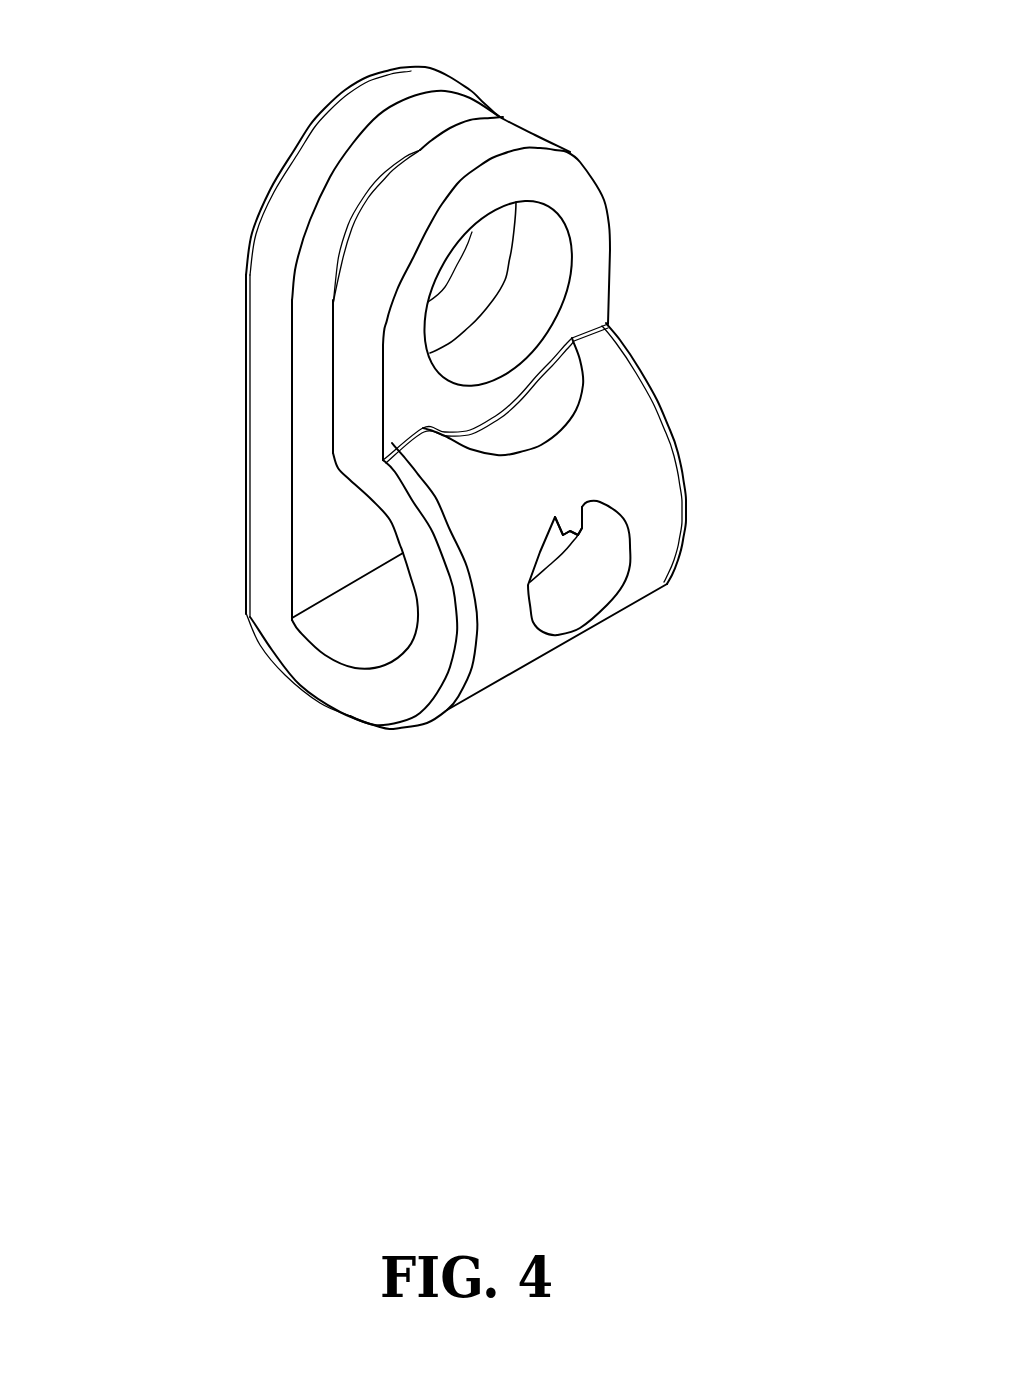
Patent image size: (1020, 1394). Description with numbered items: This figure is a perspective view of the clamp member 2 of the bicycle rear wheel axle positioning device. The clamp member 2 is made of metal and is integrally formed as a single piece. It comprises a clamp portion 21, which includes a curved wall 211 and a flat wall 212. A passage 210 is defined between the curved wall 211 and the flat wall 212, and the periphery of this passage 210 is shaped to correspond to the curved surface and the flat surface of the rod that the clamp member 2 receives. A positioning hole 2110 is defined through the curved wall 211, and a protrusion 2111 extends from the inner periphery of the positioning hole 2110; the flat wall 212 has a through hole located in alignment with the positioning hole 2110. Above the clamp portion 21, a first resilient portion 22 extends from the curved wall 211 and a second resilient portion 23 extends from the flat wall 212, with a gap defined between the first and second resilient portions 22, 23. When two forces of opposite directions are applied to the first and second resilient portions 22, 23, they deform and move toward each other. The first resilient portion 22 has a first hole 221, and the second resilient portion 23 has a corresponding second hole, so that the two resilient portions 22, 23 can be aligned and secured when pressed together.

The clamp member 2 is at (566, 34).
The clamp portion 21 is at (698, 500).
The passage 210 is at (317, 550).
The curved wall 211 is at (640, 430).
The positioning hole 2110 is at (580, 597).
The protrusion 2111 is at (578, 535).
The flat wall 212 is at (270, 405).
The first resilient portion 22 is at (598, 193).
The first hole 221 is at (548, 265).
The second resilient portion 23 is at (310, 161).